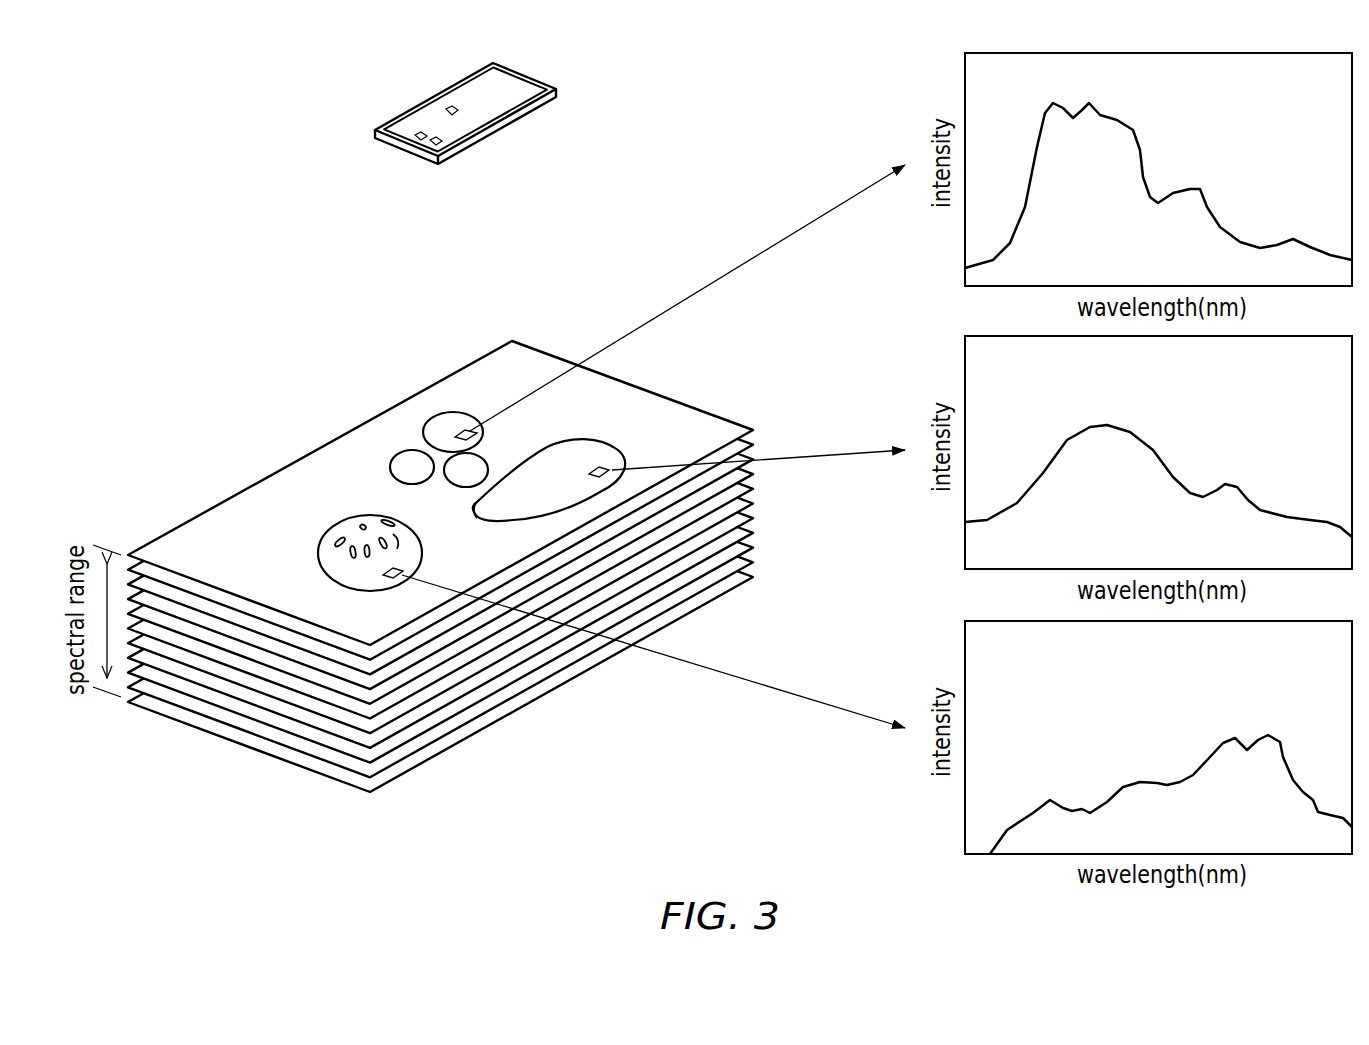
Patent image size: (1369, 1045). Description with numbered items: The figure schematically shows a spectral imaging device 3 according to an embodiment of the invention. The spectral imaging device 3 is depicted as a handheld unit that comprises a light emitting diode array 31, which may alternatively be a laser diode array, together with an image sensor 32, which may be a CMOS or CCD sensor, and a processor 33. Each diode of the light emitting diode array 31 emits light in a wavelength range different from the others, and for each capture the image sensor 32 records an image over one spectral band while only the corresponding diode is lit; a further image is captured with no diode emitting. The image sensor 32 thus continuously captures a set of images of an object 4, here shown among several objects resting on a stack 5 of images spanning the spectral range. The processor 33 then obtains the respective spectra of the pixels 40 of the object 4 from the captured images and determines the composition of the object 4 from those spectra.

The spectral imaging device 3 is at (550, 118).
The light emitting diode array 31 is at (432, 147).
The image sensor 32 is at (403, 141).
The processor 33 is at (451, 105).
The object 4 is at (428, 408).
The pixels 40 is at (466, 426).
The hyperspectral image stack 5 is at (224, 518).